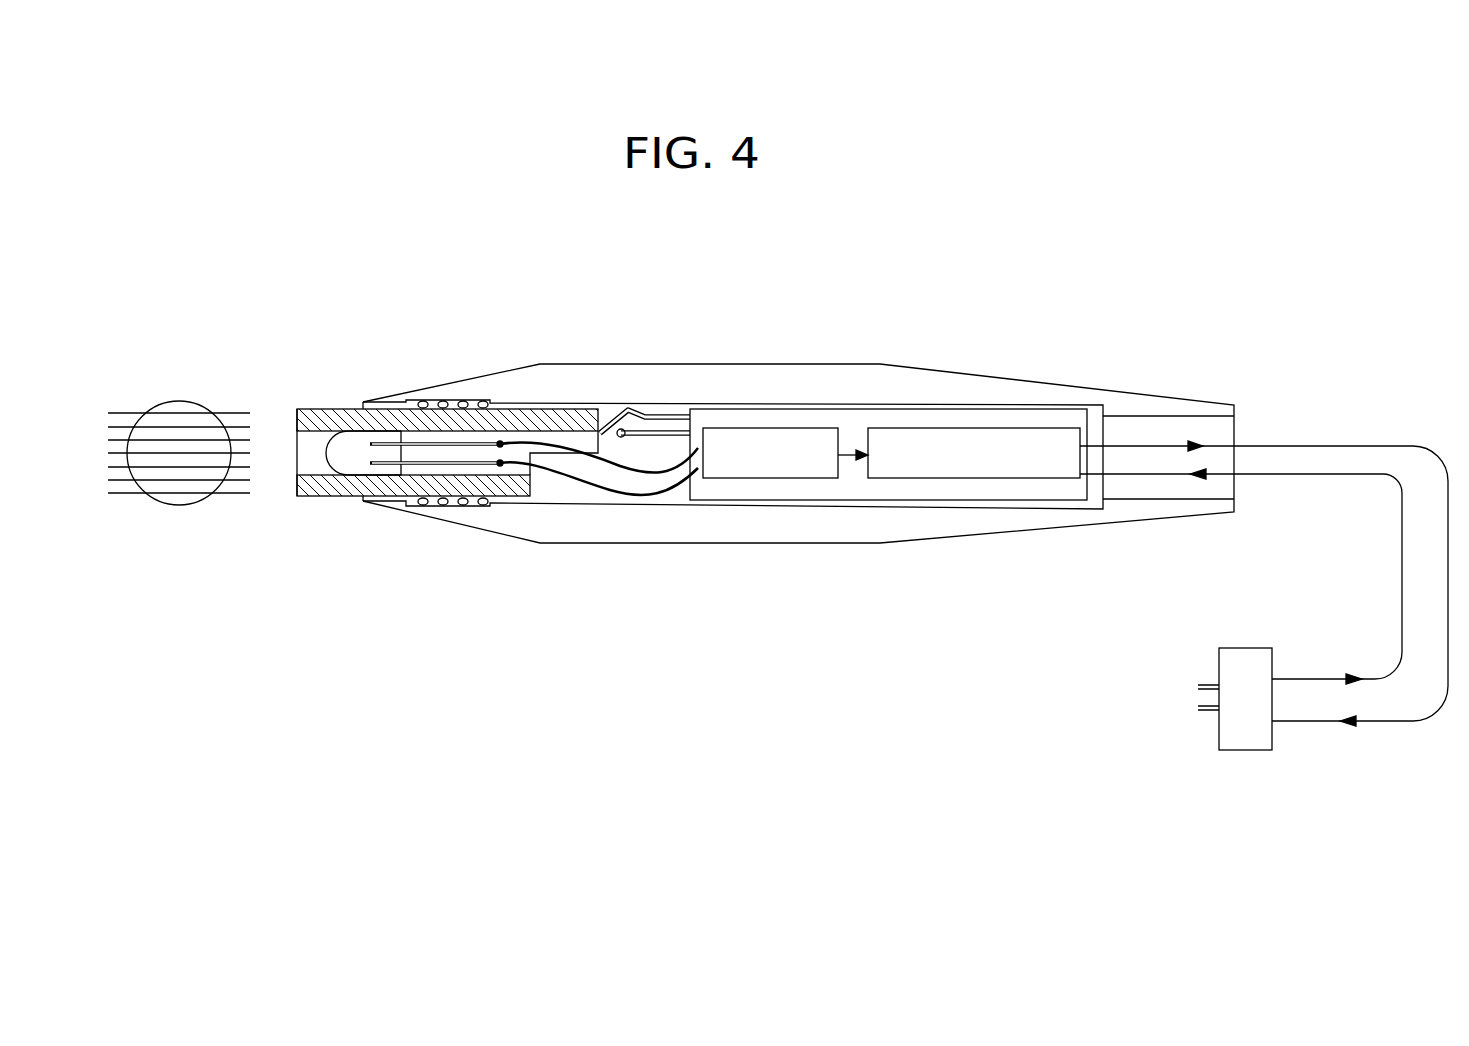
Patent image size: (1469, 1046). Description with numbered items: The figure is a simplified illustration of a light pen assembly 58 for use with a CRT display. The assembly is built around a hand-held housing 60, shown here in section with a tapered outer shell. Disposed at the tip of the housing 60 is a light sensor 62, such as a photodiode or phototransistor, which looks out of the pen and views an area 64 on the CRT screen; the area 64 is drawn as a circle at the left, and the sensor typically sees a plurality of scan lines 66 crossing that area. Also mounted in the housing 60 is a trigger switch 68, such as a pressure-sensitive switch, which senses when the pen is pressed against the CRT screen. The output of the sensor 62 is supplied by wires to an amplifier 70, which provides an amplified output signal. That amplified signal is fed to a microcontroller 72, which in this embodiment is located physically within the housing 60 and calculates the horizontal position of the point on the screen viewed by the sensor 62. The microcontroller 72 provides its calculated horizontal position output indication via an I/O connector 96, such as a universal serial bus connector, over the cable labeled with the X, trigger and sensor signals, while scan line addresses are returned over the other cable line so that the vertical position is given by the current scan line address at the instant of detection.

The light pen assembly 58 is at (1057, 325).
The hand-held housing 60 is at (830, 376).
The light sensor 62 is at (343, 446).
The area 64 is at (160, 412).
The scan lines 66 is at (245, 415).
The trigger switch 68 is at (629, 408).
The amplifier 70 is at (780, 480).
The microcontroller 72 is at (967, 479).
The I/O connector 96 is at (1190, 427).